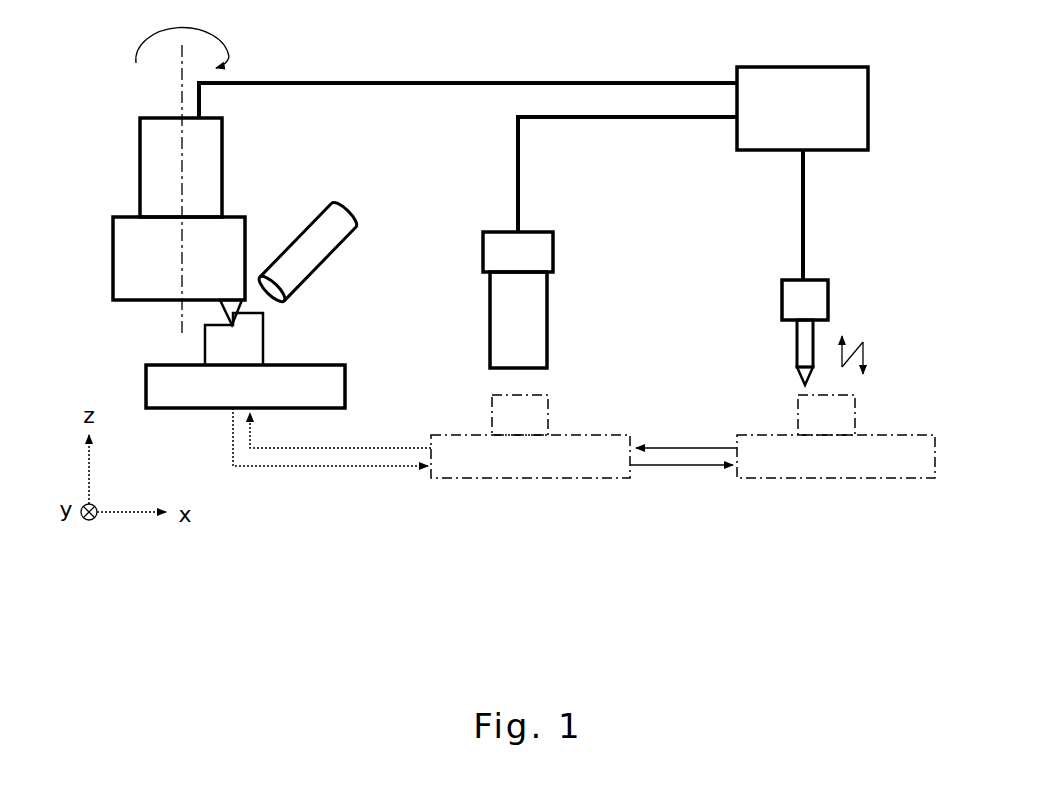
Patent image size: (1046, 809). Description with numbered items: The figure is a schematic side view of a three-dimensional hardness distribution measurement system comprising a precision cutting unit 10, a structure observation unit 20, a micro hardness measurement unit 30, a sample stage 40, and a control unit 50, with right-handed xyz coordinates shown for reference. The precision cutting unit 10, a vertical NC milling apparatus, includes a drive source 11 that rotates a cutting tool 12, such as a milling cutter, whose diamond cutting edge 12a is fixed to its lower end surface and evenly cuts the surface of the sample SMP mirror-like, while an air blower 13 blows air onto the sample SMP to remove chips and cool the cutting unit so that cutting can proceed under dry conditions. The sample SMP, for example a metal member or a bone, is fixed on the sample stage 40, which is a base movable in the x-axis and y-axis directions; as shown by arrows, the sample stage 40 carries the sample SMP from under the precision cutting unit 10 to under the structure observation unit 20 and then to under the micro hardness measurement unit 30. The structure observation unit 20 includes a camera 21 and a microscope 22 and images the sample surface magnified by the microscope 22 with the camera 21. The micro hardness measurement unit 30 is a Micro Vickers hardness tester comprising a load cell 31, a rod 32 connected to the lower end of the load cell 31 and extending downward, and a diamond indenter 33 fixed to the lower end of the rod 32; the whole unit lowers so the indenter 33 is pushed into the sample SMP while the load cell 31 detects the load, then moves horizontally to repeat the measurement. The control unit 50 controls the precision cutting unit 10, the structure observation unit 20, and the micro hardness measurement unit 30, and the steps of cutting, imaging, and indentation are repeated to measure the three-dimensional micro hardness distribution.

The precision cutting unit 10 is at (224, 187).
The drive source 11 is at (222, 172).
The cutting tool 12 is at (118, 259).
The cutting edge 12a is at (221, 309).
The air blower 13 is at (337, 237).
The structure observation unit 20 is at (548, 257).
The camera 21 is at (553, 255).
The microscope 22 is at (547, 322).
The micro hardness measurement unit 30 is at (791, 307).
The load cell 31 is at (782, 292).
The rod 32 is at (797, 342).
The indenter 33 is at (800, 376).
The sample stage 40 is at (168, 407).
The control unit 50 is at (868, 105).
The sample SMP is at (263, 350).